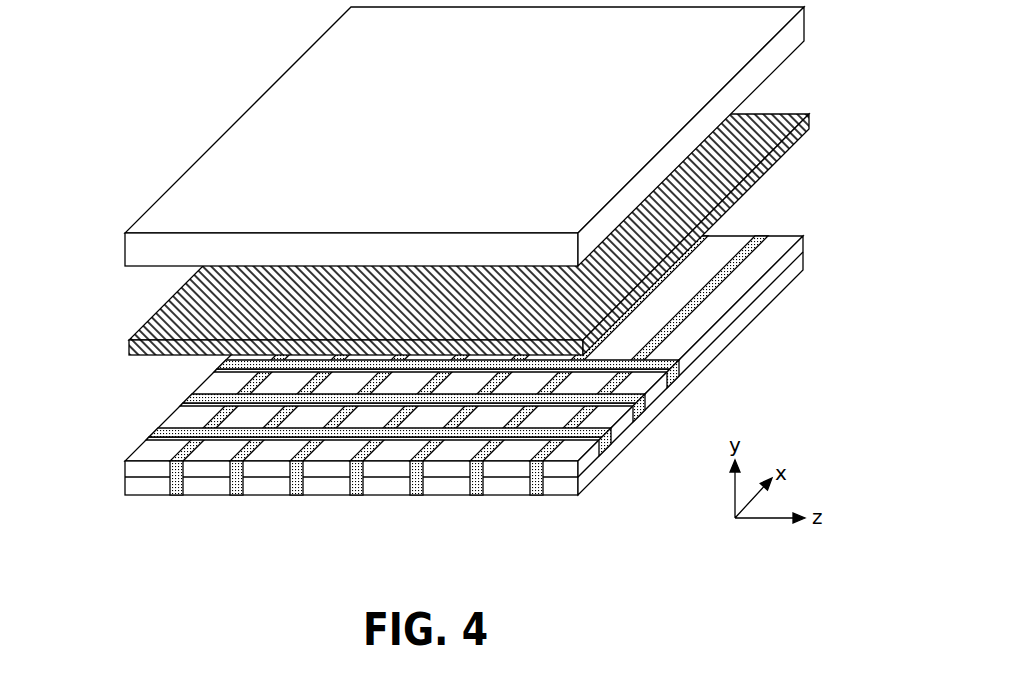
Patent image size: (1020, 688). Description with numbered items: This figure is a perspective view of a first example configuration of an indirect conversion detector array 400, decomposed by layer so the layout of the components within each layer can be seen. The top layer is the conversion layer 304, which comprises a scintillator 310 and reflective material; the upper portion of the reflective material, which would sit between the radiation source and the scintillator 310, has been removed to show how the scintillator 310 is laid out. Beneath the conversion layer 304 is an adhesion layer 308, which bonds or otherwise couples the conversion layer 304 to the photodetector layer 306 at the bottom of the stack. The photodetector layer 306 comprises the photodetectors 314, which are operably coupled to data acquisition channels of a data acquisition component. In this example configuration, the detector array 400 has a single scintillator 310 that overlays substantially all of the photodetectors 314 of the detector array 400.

The detector array 400 is at (463, 248).
The conversion layer 304 is at (505, 133).
The scintillator 310 is at (447, 101).
The adhesion layer 308 is at (809, 126).
The photodetector layer 306 is at (472, 358).
The photodetectors 314 is at (181, 418).